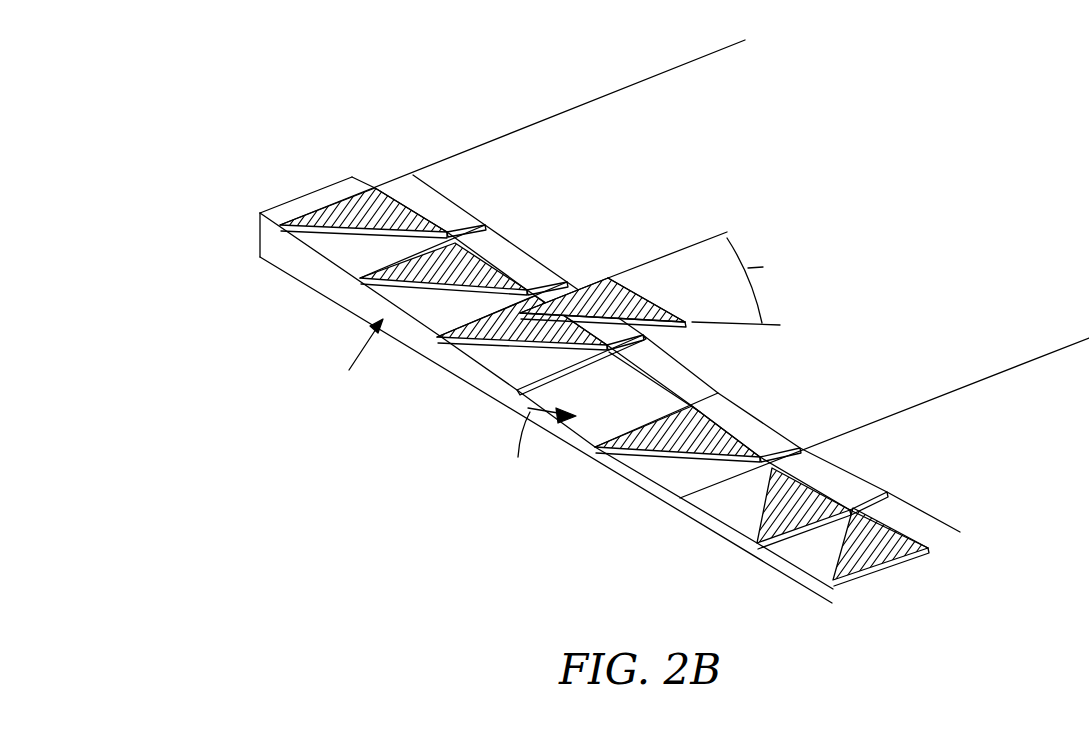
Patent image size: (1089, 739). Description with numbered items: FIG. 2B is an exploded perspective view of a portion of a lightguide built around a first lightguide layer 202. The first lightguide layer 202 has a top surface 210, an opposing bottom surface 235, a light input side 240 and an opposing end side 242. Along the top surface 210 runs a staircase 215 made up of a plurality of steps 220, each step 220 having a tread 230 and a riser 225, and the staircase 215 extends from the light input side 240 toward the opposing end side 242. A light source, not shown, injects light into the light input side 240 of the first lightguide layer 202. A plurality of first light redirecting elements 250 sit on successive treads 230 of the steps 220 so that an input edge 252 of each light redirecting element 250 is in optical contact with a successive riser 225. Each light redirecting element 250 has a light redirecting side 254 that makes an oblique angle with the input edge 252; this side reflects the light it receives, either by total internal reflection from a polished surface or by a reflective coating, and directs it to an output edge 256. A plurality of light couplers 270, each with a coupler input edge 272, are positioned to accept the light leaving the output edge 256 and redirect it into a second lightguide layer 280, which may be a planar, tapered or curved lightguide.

The first lightguide layer 202 is at (327, 286).
The top surface 210 is at (307, 203).
The staircase 215 is at (351, 357).
The steps 220 is at (533, 444).
The risers 225 is at (519, 398).
The treads 230 is at (497, 359).
The bottom surface 235 is at (276, 270).
The light input side 240 is at (262, 234).
The opposing end side 242 is at (712, 492).
The first light redirecting elements 250 is at (608, 276).
The input edge 252 is at (582, 283).
The light redirecting side 254 is at (668, 333).
The output edge 256 is at (644, 292).
The light couplers 270 is at (428, 202).
The coupler input edge 272 is at (655, 397).
The second lightguide layer 280 is at (573, 118).